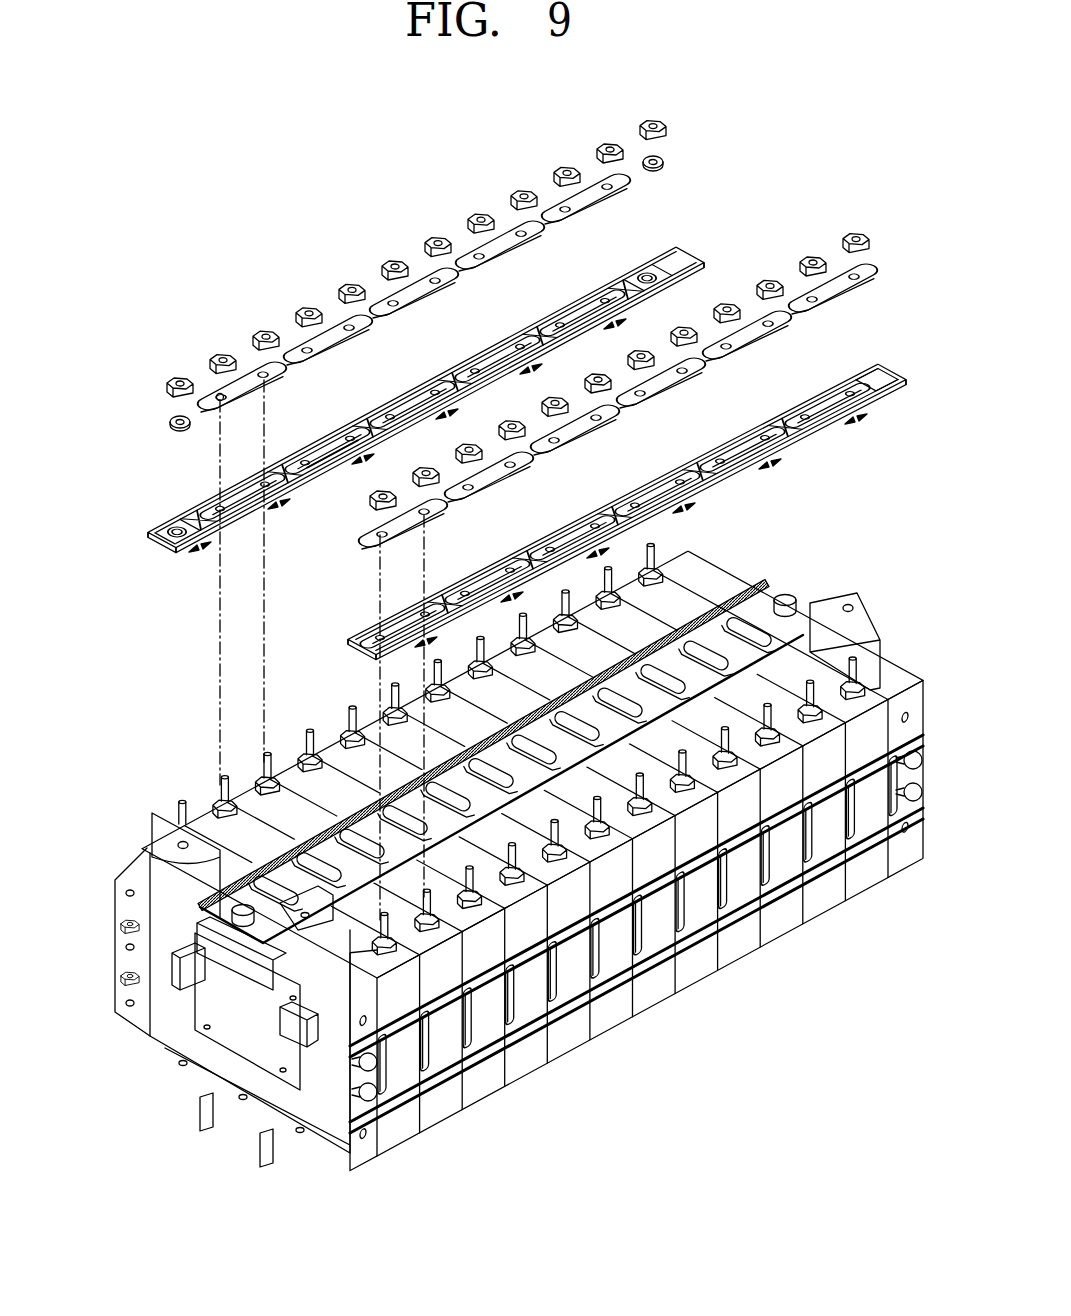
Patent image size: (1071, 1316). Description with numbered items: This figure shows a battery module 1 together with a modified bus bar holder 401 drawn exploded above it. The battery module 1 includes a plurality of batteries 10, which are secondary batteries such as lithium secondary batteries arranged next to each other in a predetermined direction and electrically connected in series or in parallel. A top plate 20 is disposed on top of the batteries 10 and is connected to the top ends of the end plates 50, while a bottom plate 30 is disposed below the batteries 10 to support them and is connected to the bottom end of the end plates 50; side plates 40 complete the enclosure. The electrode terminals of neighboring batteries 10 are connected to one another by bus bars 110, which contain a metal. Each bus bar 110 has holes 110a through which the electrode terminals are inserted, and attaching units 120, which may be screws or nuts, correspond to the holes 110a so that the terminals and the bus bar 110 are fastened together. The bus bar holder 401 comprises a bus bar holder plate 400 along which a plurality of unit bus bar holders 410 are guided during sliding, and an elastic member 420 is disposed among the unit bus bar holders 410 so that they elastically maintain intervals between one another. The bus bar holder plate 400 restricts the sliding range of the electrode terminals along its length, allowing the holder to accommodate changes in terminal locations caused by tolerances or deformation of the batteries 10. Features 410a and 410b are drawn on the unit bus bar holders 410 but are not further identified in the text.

The battery module 1 is at (838, 554).
The battery 10 is at (522, 1057).
The top plate 20 is at (210, 915).
The bottom plate 30 is at (212, 1120).
The side plate 40 is at (460, 1088).
The end plate 50 is at (208, 1048).
The bus bar 110 is at (247, 372).
The hole 110a is at (218, 395).
The attaching unit 120 is at (220, 360).
The bus bar holder plate 400 is at (153, 541).
The bus bar holder 401 is at (713, 173).
The unit bus bar holder 410 is at (306, 466).
The hole of seating portion 410a is at (353, 434).
The rib of seating portion 410b is at (327, 442).
The elastic member 420 is at (280, 465).